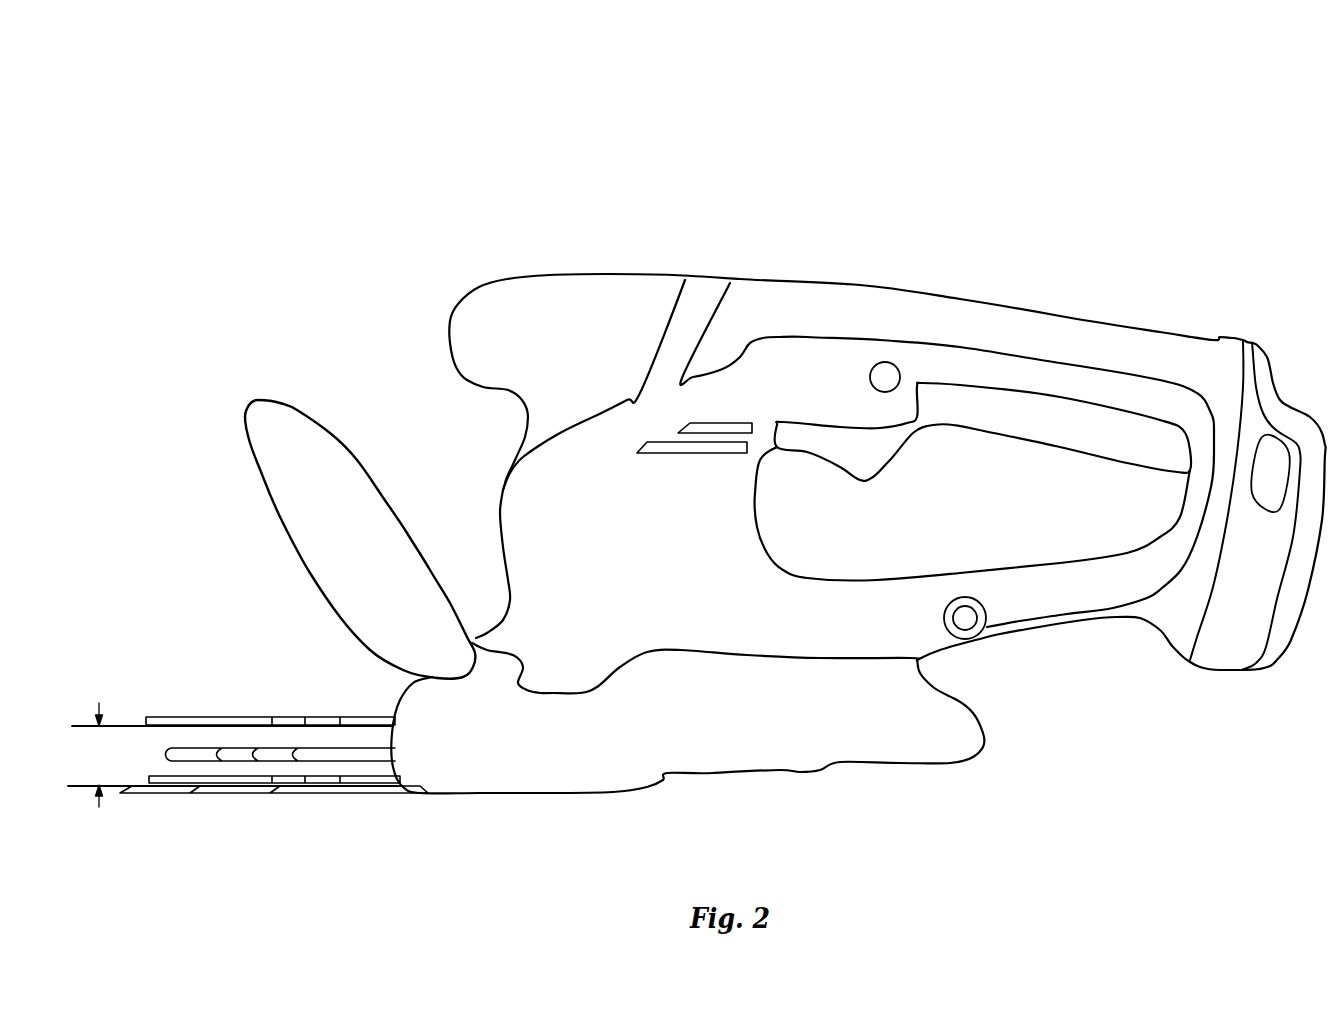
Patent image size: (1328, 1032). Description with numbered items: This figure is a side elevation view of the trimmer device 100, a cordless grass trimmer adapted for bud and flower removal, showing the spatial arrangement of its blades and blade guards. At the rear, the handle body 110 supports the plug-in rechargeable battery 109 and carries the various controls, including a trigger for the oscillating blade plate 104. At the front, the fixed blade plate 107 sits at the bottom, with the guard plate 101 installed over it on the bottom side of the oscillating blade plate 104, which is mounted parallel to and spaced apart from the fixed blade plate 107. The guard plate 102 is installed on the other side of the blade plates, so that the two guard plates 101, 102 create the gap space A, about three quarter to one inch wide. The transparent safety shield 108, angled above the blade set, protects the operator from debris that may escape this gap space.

The trimmer device 100 is at (662, 190).
The guard plate 101 is at (368, 787).
The guard plate 102 is at (260, 715).
The oscillating blade plate 104 is at (325, 742).
The fixed blade plate 107 is at (258, 797).
The safety shield 108 is at (293, 523).
The rechargeable battery 109 is at (1220, 672).
The handle body 110 is at (763, 384).